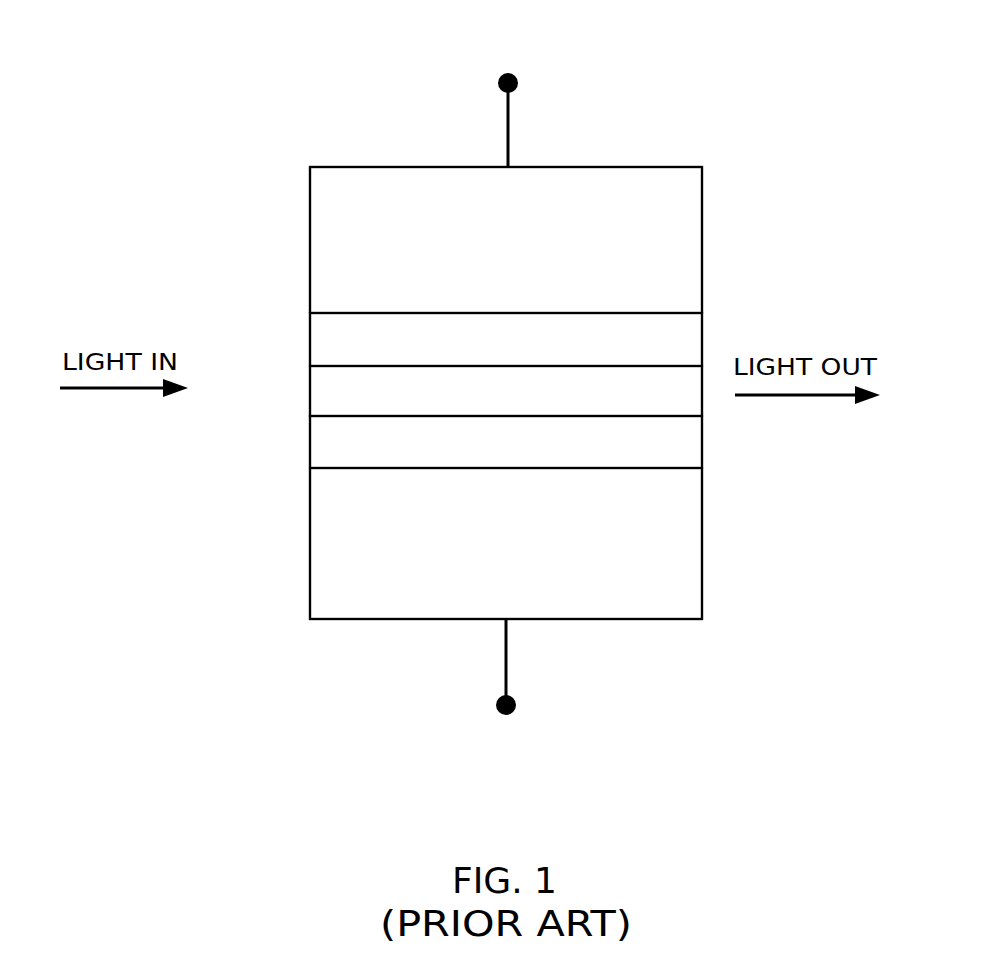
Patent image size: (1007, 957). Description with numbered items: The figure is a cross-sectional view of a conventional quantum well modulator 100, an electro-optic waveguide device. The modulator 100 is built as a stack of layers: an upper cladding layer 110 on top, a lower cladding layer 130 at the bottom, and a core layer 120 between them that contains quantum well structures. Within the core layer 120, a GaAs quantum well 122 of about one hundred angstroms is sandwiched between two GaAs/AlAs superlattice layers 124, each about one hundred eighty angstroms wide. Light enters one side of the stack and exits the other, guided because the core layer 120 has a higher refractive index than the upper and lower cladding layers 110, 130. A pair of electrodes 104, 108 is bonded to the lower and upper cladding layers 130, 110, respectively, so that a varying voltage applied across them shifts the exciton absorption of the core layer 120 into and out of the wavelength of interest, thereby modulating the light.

The quantum well modulator 100 is at (724, 164).
The electrode 104 is at (515, 708).
The electrode 108 is at (517, 83).
The upper cladding layer 110 is at (506, 240).
The core layer 120 is at (448, 390).
The GaAs quantum well 122 is at (506, 391).
The GaAs/AlAs superlattice layer 124 is at (506, 390).
The lower cladding layer 130 is at (506, 543).